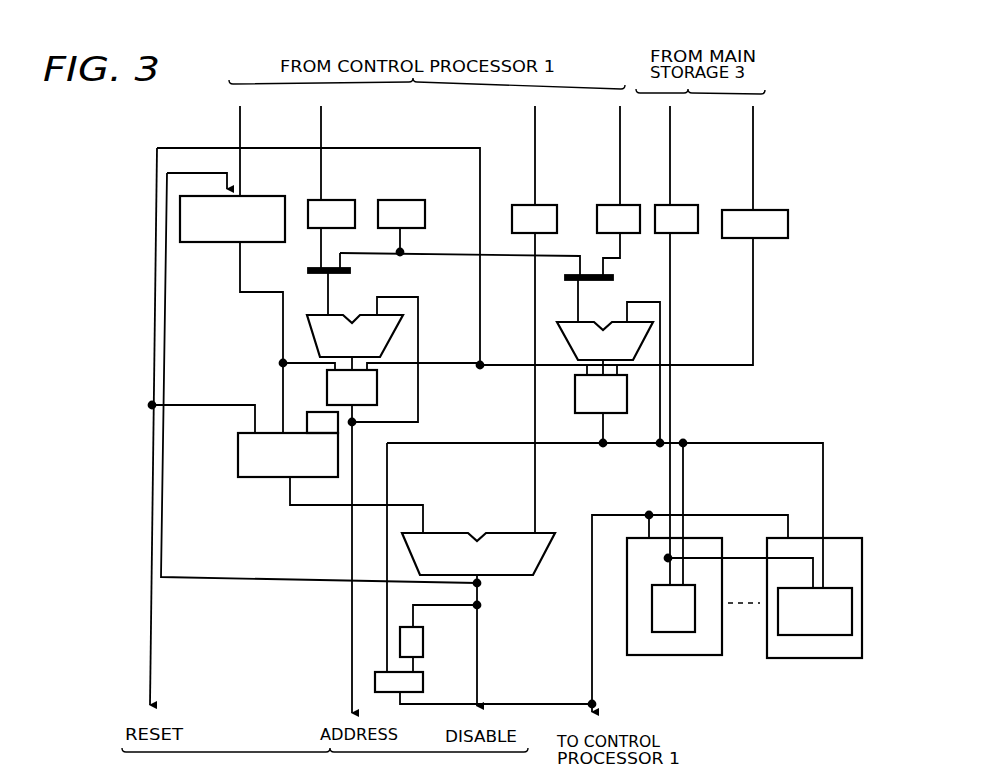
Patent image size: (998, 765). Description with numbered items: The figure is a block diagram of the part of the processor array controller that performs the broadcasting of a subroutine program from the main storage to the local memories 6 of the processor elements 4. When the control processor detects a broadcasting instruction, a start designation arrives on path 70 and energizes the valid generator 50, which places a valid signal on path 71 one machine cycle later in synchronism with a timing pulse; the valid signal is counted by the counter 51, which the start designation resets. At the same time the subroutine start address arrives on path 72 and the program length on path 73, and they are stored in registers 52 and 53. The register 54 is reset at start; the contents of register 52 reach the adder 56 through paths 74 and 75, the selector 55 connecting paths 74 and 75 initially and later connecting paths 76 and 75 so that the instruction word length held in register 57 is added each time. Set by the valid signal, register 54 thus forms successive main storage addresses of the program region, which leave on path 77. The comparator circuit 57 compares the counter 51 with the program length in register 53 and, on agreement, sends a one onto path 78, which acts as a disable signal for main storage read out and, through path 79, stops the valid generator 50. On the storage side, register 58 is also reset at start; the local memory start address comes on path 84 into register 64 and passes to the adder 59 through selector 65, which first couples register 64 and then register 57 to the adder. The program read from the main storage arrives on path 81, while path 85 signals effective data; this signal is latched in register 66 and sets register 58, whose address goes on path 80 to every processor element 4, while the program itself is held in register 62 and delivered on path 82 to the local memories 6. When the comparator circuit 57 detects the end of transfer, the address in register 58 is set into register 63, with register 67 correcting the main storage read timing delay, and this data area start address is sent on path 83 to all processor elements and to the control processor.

The processor element 4 is at (722, 545).
The local memory 6 is at (703, 577).
The valid generator 50 is at (278, 196).
The counter 51 is at (305, 480).
The register 52 is at (348, 198).
The register 53 is at (555, 200).
The register 54 is at (377, 380).
The selector 55 is at (350, 272).
The adder 56 is at (309, 328).
The comparator circuit 57 is at (416, 198).
The register 58 is at (575, 385).
The adder 59 is at (562, 320).
The register 62 is at (692, 202).
The register 63 is at (423, 680).
The register 64 is at (636, 200).
The selector 65 is at (613, 278).
The register 66 is at (780, 208).
The register 67 is at (425, 636).
The path 70 is at (243, 130).
The path 71 is at (250, 268).
The path 72 is at (324, 136).
The path 73 is at (538, 136).
The path 74 is at (318, 248).
The path 75 is at (331, 302).
The path 76 is at (403, 242).
The path 77 is at (347, 558).
The path 78 is at (479, 648).
The path 79 is at (163, 543).
The path 80 is at (740, 440).
The path 81 is at (673, 145).
The path 82 is at (673, 281).
The path 83 is at (743, 512).
The path 84 is at (623, 138).
The path 85 is at (756, 145).